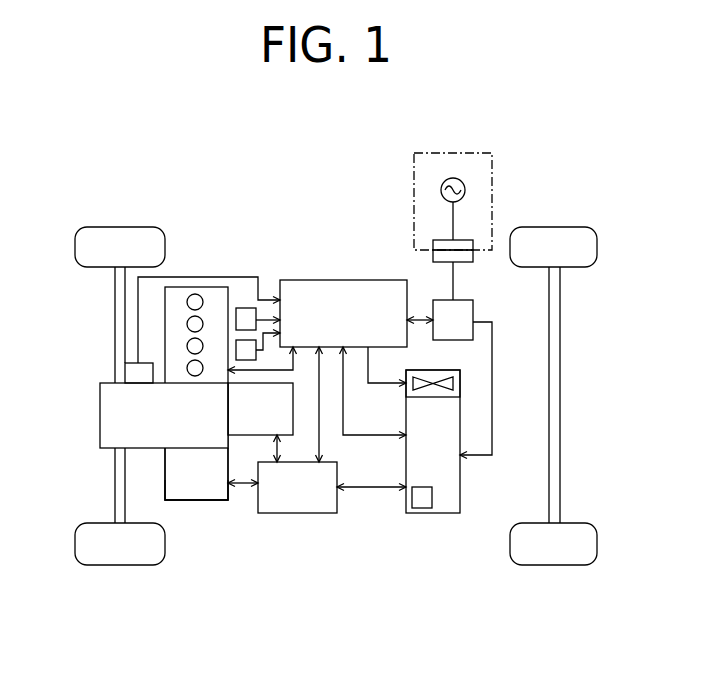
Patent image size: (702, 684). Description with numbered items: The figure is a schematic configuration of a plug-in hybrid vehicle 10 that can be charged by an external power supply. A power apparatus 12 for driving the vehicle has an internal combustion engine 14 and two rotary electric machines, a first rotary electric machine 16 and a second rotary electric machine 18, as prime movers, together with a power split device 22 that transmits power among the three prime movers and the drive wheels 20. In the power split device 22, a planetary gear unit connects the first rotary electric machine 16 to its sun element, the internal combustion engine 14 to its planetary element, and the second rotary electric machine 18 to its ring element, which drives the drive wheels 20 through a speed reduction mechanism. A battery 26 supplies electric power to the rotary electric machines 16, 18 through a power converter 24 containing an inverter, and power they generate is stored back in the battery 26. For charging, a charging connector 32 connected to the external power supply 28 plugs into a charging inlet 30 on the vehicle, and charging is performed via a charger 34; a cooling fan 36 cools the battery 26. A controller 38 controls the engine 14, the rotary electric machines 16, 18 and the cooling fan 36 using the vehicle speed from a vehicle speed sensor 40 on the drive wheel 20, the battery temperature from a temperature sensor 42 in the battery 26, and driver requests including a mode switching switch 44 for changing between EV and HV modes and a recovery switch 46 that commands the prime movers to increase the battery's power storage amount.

The vehicle 10 is at (285, 173).
The power apparatus 12 is at (148, 462).
The internal combustion engine 14 is at (205, 287).
The first rotary electric machine 16 is at (257, 437).
The second rotary electric machine 18 is at (208, 500).
The drive wheels 20 is at (128, 227).
The power split device 22 is at (100, 422).
The power converter 24 is at (297, 513).
The battery 26 is at (460, 498).
The external power supply 28 is at (465, 188).
The charging inlet 30 is at (433, 256).
The charging connector 32 is at (433, 245).
The charger 34 is at (473, 312).
The cooling fan 36 is at (460, 385).
The controller 38 is at (347, 280).
The vehicle speed sensor 40 is at (125, 373).
The temperature sensor 42 is at (425, 513).
The mode switching switch 44 is at (238, 342).
The recovery switch 46 is at (246, 308).